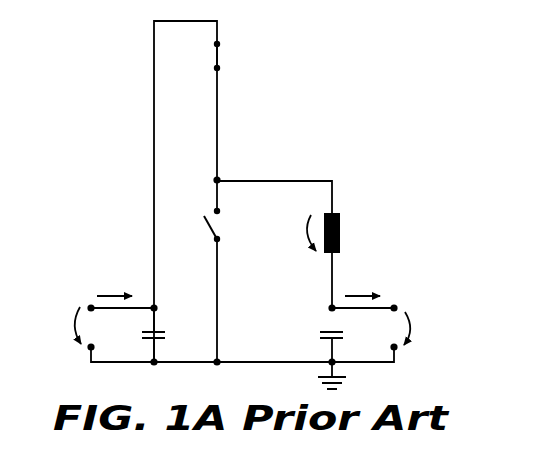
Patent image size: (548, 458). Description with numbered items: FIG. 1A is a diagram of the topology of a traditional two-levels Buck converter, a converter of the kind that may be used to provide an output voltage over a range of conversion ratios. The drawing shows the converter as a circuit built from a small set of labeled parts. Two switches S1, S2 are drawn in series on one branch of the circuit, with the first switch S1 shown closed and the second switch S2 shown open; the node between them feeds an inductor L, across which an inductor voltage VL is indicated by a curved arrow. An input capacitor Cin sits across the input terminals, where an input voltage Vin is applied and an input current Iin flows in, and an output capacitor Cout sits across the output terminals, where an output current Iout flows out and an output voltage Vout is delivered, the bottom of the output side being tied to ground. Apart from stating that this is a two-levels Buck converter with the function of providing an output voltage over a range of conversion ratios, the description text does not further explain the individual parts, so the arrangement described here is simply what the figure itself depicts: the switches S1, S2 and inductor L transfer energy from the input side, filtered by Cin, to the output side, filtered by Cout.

The first switch S1 is at (203, 56).
The second switch S2 is at (203, 225).
The inductor L is at (339, 233).
The inductor voltage VL is at (302, 233).
The input capacitor Cin is at (139, 334).
The output capacitor Cout is at (315, 334).
The input current Iin is at (114, 287).
The output current Iout is at (362, 287).
The input voltage Vin is at (61, 325).
The output voltage Vout is at (423, 328).